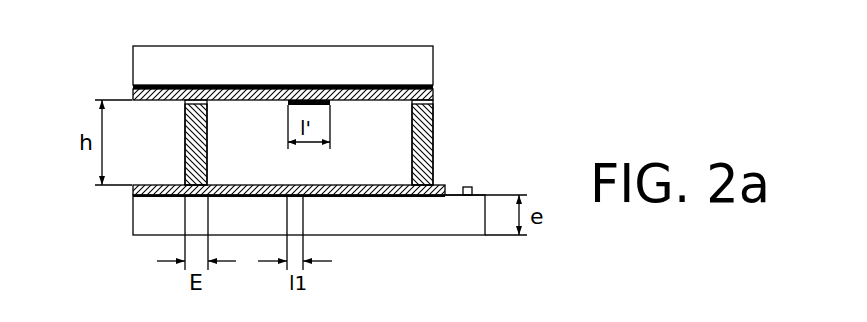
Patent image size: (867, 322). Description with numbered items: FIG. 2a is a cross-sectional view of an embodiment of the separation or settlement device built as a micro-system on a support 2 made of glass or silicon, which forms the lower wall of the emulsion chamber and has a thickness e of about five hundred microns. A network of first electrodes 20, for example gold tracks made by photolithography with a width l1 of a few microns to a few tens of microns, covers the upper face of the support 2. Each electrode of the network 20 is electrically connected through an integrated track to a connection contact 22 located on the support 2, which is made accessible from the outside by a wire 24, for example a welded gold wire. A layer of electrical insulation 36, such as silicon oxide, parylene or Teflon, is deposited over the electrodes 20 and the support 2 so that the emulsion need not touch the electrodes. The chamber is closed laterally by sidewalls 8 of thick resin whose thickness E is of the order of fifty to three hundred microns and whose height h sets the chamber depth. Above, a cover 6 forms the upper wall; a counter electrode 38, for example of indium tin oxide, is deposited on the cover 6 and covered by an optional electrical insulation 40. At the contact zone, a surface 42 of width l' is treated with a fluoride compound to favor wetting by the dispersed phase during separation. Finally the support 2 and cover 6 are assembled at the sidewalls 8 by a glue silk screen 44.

The support 2 is at (458, 221).
The cover 6 is at (423, 68).
The sidewalls 8 is at (185, 143).
The network of first electrodes 20 is at (272, 186).
The connection contact 22 is at (466, 187).
The wire 24 is at (475, 188).
The layer of electrical insulation 36 is at (133, 191).
The counter electrode 38 is at (133, 86).
The electrical insulation 40 is at (433, 93).
The surface 42 is at (290, 85).
The glue silk screen 44 is at (412, 114).